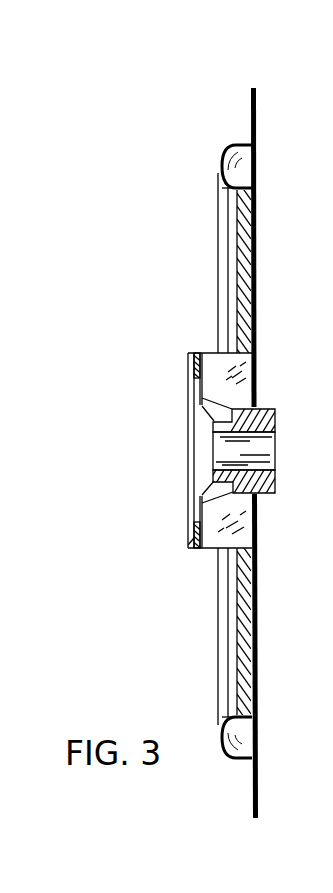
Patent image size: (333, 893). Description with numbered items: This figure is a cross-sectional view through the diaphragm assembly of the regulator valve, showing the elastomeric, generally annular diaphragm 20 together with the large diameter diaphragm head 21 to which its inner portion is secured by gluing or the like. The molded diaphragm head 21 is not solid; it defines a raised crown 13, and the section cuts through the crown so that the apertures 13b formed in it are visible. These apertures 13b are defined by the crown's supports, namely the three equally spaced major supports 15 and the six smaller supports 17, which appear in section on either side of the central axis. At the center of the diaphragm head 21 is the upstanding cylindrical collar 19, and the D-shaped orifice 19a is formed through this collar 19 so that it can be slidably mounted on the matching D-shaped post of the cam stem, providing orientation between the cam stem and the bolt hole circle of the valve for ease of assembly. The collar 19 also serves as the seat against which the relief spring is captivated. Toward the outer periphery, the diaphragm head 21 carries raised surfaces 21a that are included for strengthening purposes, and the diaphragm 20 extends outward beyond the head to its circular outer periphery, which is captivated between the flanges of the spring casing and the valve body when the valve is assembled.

The diaphragm 20 is at (219, 166).
The diaphragm head 21 is at (228, 300).
The raised surfaces 21a is at (235, 262).
The smaller supports 17 is at (215, 350).
The raised crown 13 is at (190, 508).
The apertures 13b is at (192, 356).
The major supports 15 is at (259, 393).
The collar 19 is at (275, 423).
The D-shaped orifice 19a is at (215, 452).